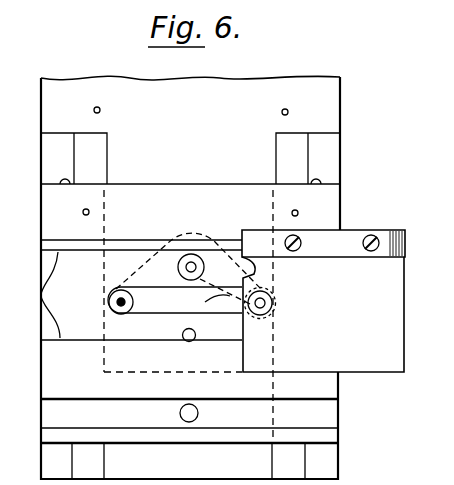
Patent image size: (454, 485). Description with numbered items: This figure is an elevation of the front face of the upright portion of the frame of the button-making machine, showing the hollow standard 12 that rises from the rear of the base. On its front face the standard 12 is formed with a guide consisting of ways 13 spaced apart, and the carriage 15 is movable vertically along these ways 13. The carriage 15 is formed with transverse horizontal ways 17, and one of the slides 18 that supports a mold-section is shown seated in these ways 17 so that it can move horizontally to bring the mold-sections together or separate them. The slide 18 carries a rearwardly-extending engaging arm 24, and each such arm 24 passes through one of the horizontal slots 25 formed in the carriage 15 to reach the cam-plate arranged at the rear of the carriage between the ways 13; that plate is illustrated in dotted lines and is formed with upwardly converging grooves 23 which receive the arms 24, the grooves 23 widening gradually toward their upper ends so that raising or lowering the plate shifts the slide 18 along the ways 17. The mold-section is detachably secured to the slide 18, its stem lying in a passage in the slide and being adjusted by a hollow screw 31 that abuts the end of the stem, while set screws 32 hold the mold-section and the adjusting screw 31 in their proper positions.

The standard 12 is at (330, 95).
The ways 13 is at (290, 141).
The carriage 15 is at (183, 193).
The transverse horizontal ways 17 is at (41, 294).
The slide 18 is at (388, 288).
The grooves 23 is at (138, 296).
The engaging arms 24 is at (286, 301).
The horizontal slots 25 is at (168, 314).
The hollow screws 31 is at (406, 243).
The set screws 32 is at (362, 243).